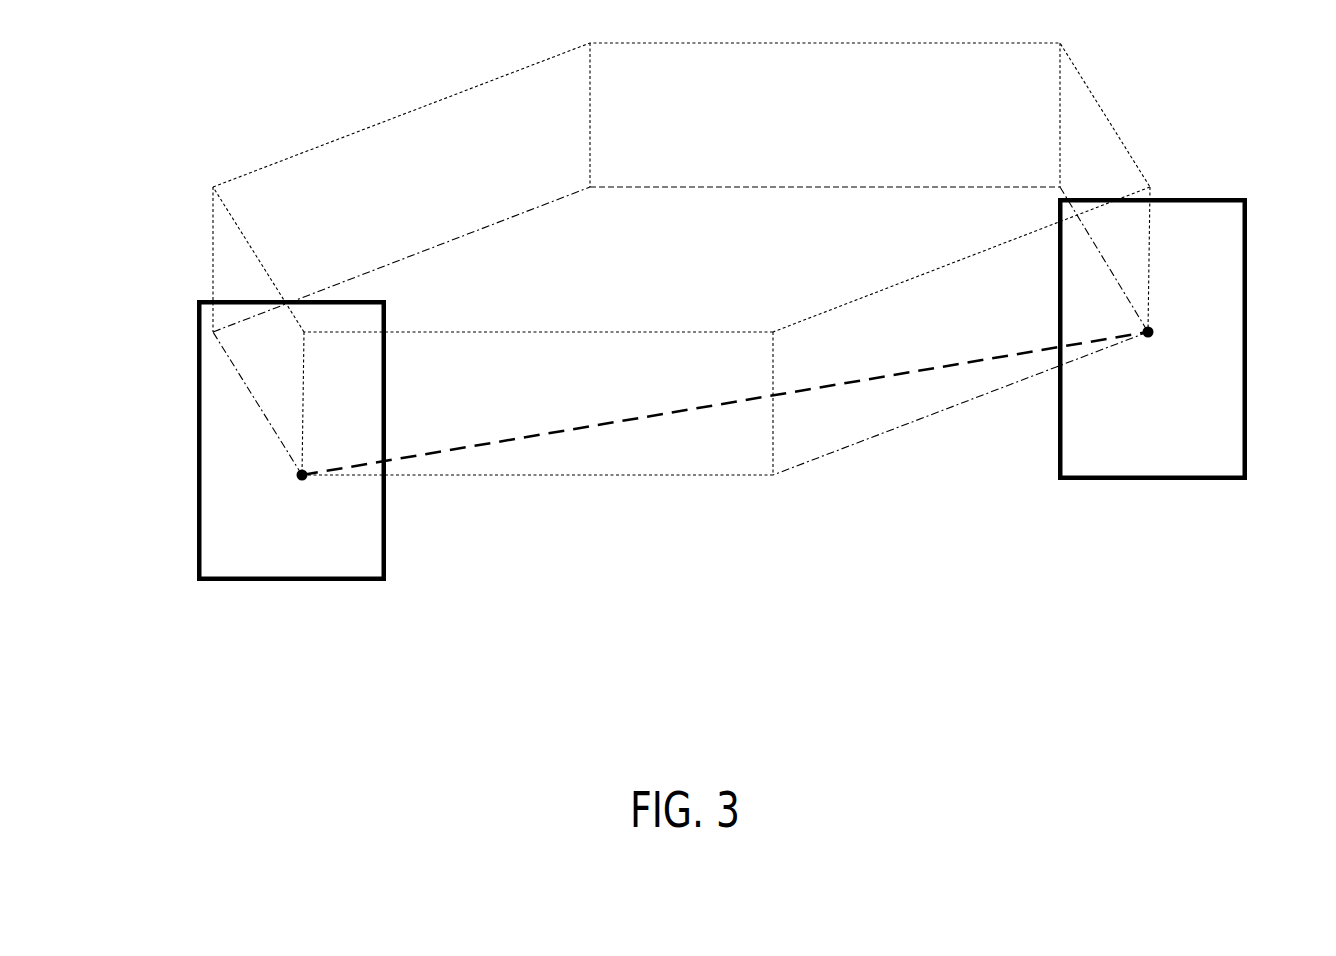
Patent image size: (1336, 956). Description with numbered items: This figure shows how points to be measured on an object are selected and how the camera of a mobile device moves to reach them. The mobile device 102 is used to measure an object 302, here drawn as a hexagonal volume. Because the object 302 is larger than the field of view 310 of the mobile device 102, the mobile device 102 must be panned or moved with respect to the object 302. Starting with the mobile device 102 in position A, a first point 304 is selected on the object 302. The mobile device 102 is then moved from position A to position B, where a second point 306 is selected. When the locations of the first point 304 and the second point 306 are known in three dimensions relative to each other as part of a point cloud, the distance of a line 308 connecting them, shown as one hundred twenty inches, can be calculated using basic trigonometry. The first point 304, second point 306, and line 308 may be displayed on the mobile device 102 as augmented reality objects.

The mobile device 102 is at (182, 306).
The object 302 is at (327, 145).
The first point 304 is at (302, 483).
The second point 306 is at (1158, 332).
The line 308 is at (702, 393).
The field of view 310 is at (213, 433).